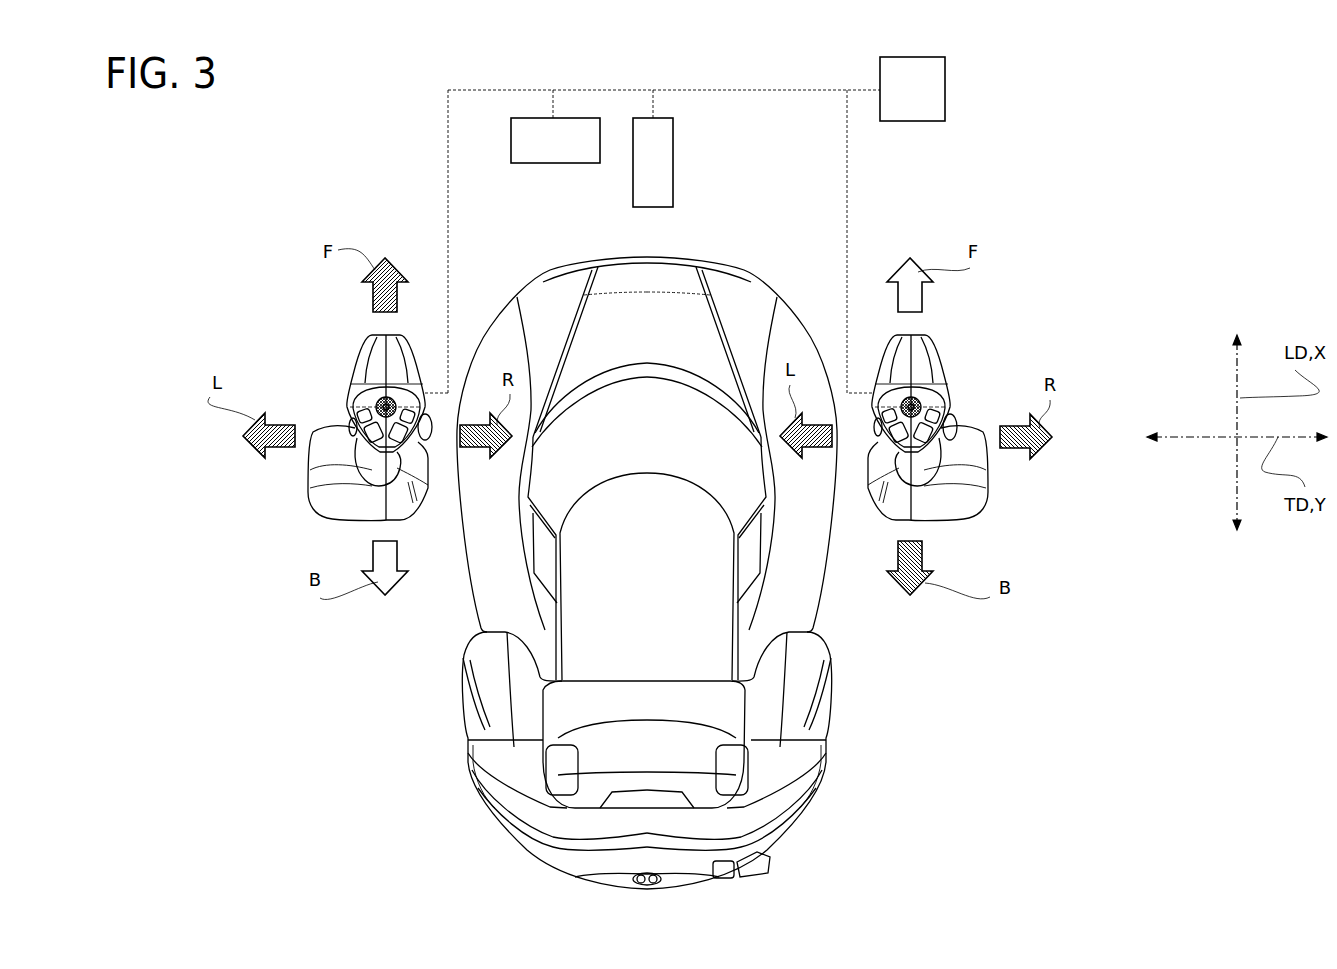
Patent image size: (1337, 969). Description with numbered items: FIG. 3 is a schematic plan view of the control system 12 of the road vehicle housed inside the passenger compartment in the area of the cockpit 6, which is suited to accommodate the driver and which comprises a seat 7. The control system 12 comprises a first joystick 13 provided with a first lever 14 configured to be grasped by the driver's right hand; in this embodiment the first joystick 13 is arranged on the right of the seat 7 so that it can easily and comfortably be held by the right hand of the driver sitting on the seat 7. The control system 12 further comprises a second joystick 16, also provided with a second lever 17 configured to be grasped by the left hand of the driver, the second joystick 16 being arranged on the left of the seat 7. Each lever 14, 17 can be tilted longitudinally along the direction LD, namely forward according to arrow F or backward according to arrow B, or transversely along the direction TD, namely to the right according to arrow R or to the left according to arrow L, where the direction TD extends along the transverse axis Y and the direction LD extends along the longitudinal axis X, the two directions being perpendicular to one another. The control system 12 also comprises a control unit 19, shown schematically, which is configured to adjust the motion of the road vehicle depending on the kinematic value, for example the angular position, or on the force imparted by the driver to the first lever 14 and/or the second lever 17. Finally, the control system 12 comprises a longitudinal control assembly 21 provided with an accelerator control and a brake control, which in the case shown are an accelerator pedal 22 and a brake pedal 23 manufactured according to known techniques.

The cockpit 6 is at (429, 619).
The seat 7 is at (807, 758).
The control system 12 is at (1046, 271).
The first joystick 13 is at (947, 362).
The first lever 14 is at (945, 485).
The second joystick 16 is at (343, 364).
The second lever 17 is at (350, 485).
The control unit 19 is at (902, 100).
The longitudinal control assembly 21 is at (576, 194).
The accelerator pedal 22 is at (660, 166).
The brake pedal 23 is at (512, 128).